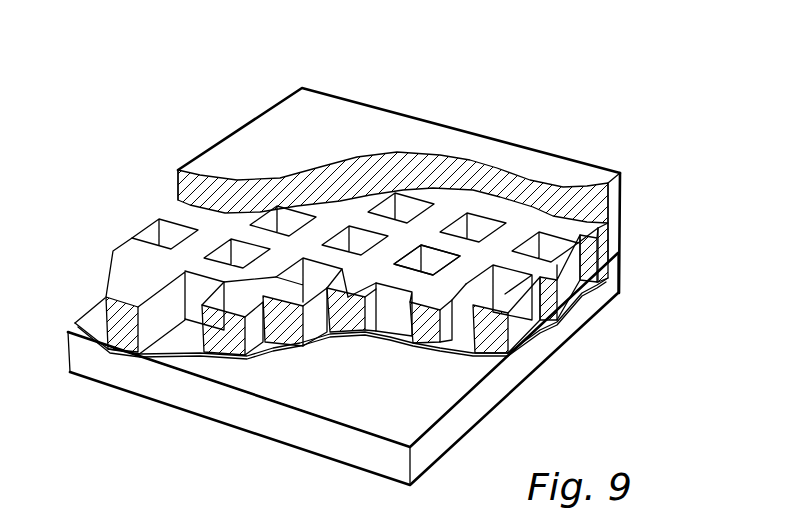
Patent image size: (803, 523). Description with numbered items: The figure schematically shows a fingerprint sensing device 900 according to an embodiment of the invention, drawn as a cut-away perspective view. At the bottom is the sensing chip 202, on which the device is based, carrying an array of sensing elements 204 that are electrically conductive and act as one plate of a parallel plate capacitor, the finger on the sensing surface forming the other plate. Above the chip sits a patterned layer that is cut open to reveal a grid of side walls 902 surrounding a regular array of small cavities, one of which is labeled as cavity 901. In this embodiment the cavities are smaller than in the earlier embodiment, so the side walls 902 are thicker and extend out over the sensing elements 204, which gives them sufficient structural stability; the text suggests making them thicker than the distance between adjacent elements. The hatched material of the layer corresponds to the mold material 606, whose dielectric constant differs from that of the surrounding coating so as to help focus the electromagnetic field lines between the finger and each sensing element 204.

The fingerprint sensing device 900 is at (612, 88).
The cavity opening 901 is at (430, 262).
The side walls 902 is at (140, 290).
The mold material 606 is at (618, 250).
The sensing chip 202 is at (557, 338).
The sensing elements 204 is at (97, 315).